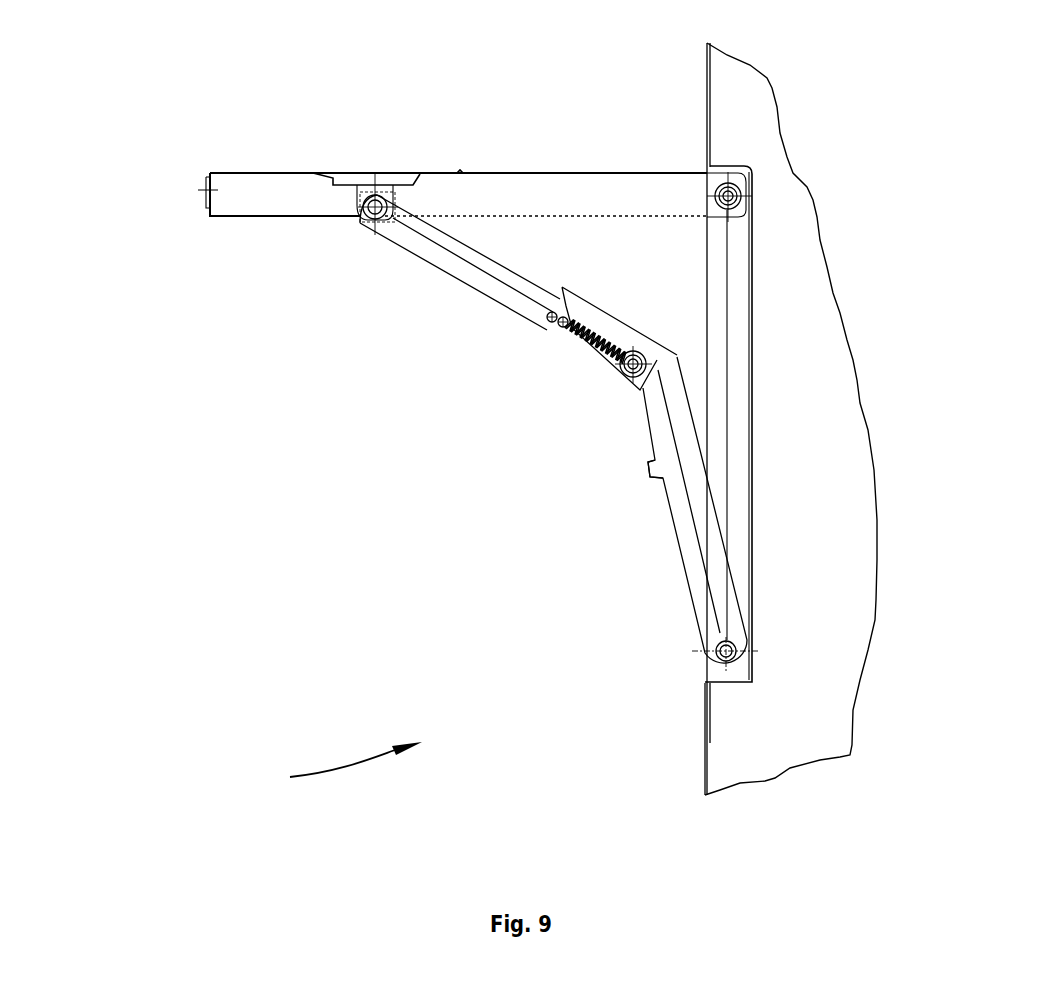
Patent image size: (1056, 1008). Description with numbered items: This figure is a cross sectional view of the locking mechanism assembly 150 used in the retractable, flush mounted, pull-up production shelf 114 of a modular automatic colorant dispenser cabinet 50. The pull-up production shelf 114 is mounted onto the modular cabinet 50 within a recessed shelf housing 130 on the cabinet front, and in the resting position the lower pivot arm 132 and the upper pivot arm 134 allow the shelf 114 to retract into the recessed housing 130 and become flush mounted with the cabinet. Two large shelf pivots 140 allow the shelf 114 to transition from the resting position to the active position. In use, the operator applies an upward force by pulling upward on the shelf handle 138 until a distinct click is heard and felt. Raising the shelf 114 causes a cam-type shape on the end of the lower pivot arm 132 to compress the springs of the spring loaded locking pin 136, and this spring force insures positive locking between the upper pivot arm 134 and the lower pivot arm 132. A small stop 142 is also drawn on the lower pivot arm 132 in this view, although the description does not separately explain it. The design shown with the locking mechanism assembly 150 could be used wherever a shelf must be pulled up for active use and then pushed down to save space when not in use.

The modular automatic colorant dispenser cabinet 50 is at (820, 617).
The pull-up five gallon production shelf 114 is at (255, 205).
The recessed shelf housing 130 is at (740, 385).
The lower pivot arm 132 is at (686, 547).
The upper pivot arm 134 is at (440, 272).
The spring loaded locking pin 136 is at (563, 325).
The shelf handle 138 is at (207, 175).
The large shelf pivots 140 is at (730, 203).
The stop 142 is at (658, 470).
The locking mechanism assembly 150 is at (336, 768).